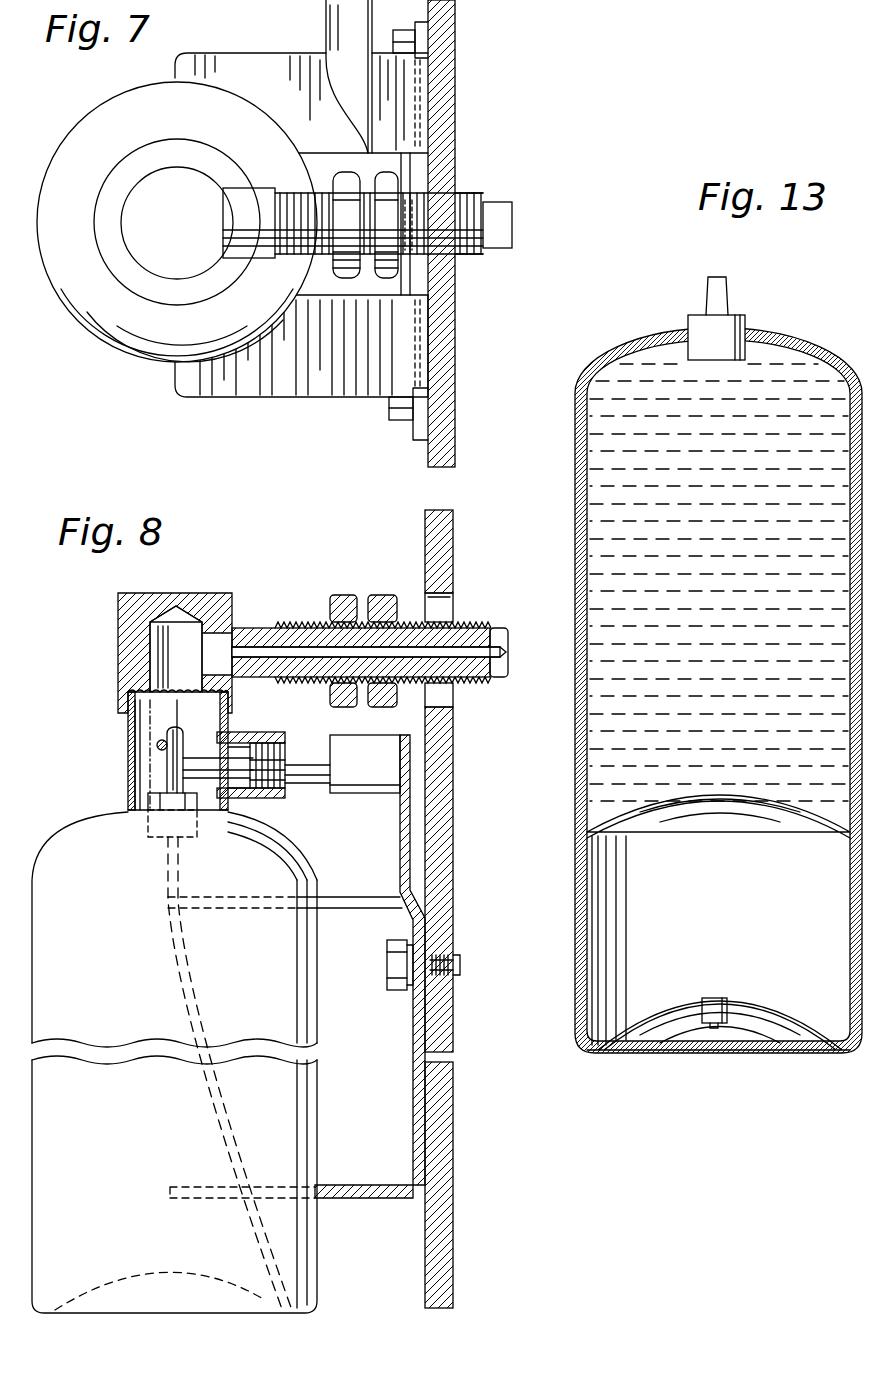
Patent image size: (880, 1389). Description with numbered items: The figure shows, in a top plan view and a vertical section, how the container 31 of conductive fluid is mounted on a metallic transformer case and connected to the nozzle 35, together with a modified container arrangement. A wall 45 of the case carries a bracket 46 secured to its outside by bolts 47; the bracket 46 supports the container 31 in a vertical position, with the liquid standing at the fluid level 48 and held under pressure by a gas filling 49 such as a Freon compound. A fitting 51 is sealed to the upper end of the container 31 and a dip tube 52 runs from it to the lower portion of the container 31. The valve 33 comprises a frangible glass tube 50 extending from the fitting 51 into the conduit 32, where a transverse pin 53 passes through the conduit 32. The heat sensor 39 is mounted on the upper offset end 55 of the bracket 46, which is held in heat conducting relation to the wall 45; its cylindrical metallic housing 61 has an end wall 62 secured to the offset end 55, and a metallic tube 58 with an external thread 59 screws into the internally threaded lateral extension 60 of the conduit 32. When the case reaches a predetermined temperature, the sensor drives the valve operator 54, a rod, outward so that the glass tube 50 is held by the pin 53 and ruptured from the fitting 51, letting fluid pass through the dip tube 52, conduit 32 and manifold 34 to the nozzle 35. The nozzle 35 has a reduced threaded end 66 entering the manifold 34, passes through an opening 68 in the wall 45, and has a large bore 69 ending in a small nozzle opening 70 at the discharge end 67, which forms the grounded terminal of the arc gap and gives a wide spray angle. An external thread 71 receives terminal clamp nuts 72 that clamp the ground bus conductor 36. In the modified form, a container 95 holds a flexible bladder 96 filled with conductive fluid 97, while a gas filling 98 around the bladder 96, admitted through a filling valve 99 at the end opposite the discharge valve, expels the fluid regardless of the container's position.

In FIG. 7, the container 31 is at (98, 345).
In FIG. 8, the container 31 is at (317, 1097).
In FIG. 8, the conduit 32 is at (128, 790).
In FIG. 8, the valve 33 is at (150, 765).
In FIG. 13, the valve 33 is at (752, 308).
In FIG. 7, the manifold 34 is at (123, 243).
In FIG. 8, the manifold 34 is at (118, 620).
In FIG. 7, the nozzle 35 is at (292, 185).
In FIG. 8, the nozzle 35 is at (290, 620).
In FIG. 7, the ground bus conductor 36 is at (370, 135).
In FIG. 8, the ground bus conductor 36 is at (360, 703).
In FIG. 8, the heat sensor 39 is at (292, 725).
In FIG. 7, the wall 45 is at (455, 90).
In FIG. 8, the wall 45 is at (453, 1082).
In FIG. 7, the bracket 46 is at (318, 390).
In FIG. 8, the bracket 46 is at (345, 905).
In FIG. 7, the bolts 47 is at (387, 32).
In FIG. 8, the bolts 47 is at (387, 970).
In FIG. 8, the fluid level 48 is at (130, 945).
In FIG. 8, the gas filling 49 is at (305, 862).
In FIG. 8, the glass tube 50 is at (168, 728).
In FIG. 8, the fitting 51 is at (160, 805).
In FIG. 8, the dip tube 52 is at (215, 1105).
In FIG. 8, the transverse pin 53 is at (157, 745).
In FIG. 8, the valve operator 54 is at (200, 745).
In FIG. 7, the upper offset end 55 is at (405, 285).
In FIG. 8, the upper offset end 55 is at (405, 838).
In FIG. 8, the metallic tube 58 is at (318, 785).
In FIG. 8, the external thread 59 is at (300, 750).
In FIG. 8, the lateral extension 60 is at (275, 795).
In FIG. 7, the cylindrical metallic housing 61 is at (232, 195).
In FIG. 8, the cylindrical metallic housing 61 is at (376, 770).
In FIG. 8, the end wall 62 is at (400, 780).
In FIG. 7, the reduced threaded end 66 is at (252, 210).
In FIG. 8, the reduced threaded end 66 is at (245, 632).
In FIG. 7, the discharge end 67 is at (498, 205).
In FIG. 8, the discharge end 67 is at (495, 680).
In FIG. 7, the opening 68 is at (445, 185).
In FIG. 8, the opening 68 is at (453, 603).
In FIG. 8, the bore 69 is at (482, 648).
In FIG. 8, the nozzle opening 70 is at (506, 652).
In FIG. 7, the external thread 71 is at (320, 200).
In FIG. 8, the external thread 71 is at (410, 620).
In FIG. 7, the terminal clamp nuts 72 is at (385, 280).
In FIG. 8, the terminal clamp nuts 72 is at (372, 595).
In FIG. 13, the container 95 is at (578, 445).
In FIG. 13, the bladder 96 is at (588, 500).
In FIG. 13, the conductive fluid 97 is at (792, 532).
In FIG. 13, the gas filling 98 is at (788, 897).
In FIG. 13, the filling valve 99 is at (725, 1025).